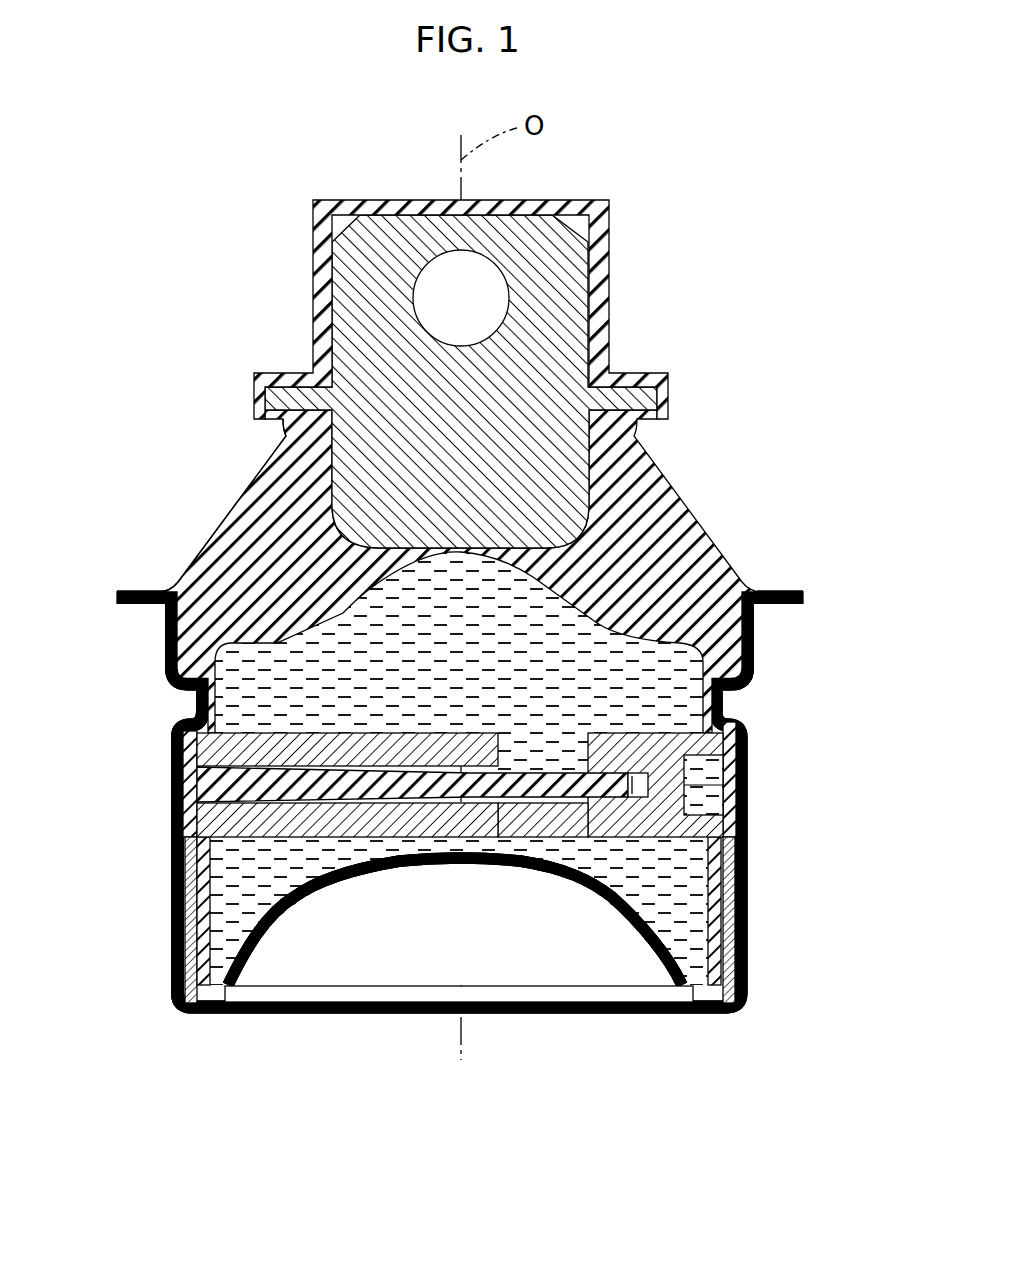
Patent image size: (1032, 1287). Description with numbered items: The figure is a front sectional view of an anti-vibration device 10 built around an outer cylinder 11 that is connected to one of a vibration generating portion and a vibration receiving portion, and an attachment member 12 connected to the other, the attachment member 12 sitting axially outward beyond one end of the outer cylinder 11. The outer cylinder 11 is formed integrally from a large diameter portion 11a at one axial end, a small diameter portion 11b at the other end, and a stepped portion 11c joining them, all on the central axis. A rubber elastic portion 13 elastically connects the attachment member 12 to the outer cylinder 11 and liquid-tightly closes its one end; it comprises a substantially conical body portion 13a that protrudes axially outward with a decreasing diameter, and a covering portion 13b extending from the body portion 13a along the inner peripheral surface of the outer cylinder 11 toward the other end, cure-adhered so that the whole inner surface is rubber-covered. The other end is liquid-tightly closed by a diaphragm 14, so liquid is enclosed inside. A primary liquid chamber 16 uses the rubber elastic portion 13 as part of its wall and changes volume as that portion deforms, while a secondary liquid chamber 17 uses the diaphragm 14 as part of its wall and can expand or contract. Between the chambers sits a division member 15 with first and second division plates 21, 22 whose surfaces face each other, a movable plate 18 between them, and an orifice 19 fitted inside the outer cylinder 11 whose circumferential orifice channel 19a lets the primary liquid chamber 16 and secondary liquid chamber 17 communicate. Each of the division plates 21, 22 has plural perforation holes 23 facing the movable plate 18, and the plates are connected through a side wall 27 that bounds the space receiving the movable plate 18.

The anti-vibration device 10 is at (680, 212).
The outer cylinder 11 is at (766, 635).
The large diameter portion 11a is at (165, 640).
The small diameter portion 11b is at (173, 767).
The stepped portion 11c is at (197, 700).
The attachment member 12 is at (583, 290).
The rubber elastic portion 13 is at (692, 493).
The body portion 13a is at (227, 517).
The covering portion 13b is at (190, 782).
The diaphragm 14 is at (353, 880).
The division member 15 is at (712, 724).
The primary liquid chamber 16 is at (510, 616).
The secondary liquid chamber 17 is at (680, 896).
The movable plate 18 is at (627, 780).
The orifice 19 is at (716, 803).
The orifice channel 19a is at (717, 783).
The first division plate 21 is at (488, 735).
The second division plate 22 is at (493, 830).
The perforation holes 23 is at (587, 745).
The side wall 27 is at (675, 787).